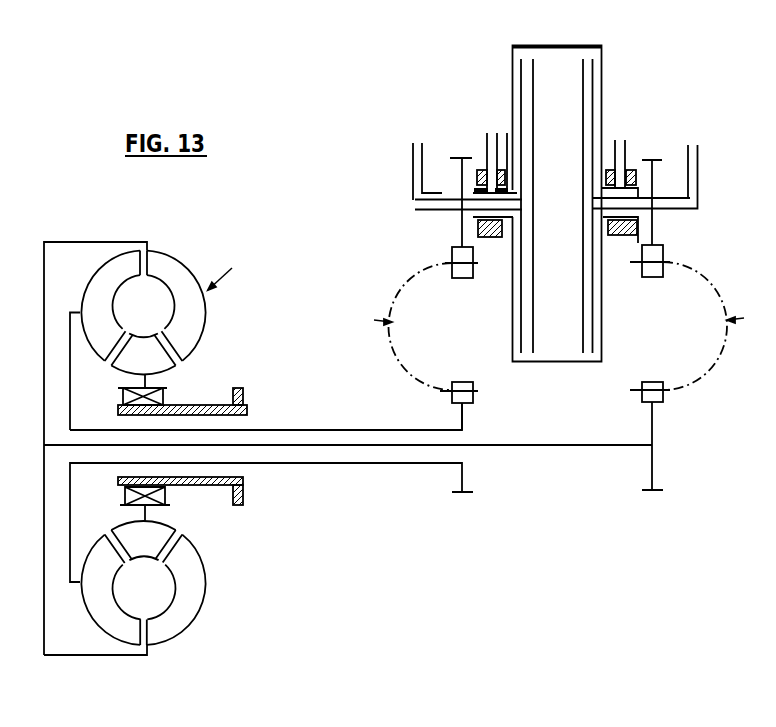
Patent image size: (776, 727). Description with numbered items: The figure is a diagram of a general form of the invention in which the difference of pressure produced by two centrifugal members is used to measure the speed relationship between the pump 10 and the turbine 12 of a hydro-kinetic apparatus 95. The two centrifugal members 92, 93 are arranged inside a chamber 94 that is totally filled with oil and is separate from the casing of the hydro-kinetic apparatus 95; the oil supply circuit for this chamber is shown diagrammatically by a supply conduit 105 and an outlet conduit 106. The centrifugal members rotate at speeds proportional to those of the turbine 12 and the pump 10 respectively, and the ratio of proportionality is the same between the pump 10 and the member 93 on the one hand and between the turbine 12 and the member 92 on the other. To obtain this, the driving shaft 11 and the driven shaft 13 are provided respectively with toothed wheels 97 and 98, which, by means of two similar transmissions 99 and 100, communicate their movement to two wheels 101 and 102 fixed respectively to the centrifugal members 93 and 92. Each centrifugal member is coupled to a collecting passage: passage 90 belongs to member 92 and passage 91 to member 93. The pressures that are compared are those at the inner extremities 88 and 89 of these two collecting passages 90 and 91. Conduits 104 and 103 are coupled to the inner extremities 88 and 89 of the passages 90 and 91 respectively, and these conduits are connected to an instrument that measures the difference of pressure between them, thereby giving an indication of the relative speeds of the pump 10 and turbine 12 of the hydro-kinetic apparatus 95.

The pump 10 is at (177, 257).
The driving shaft 11 is at (562, 450).
The turbine 12 is at (90, 277).
The driven shaft 13 is at (320, 430).
The inner extremity 88 is at (527, 202).
The inner extremity 89 is at (586, 208).
The collecting passage 90 is at (527, 121).
The collecting passage 91 is at (585, 122).
The centrifugal member 92 is at (516, 138).
The centrifugal member 93 is at (596, 147).
The chamber 94 is at (566, 44).
The hydro-kinetic apparatus 95 is at (231, 269).
The toothed wheel 97 is at (656, 425).
The toothed wheel 98 is at (467, 421).
The transmission 99 is at (714, 326).
The transmission 100 is at (398, 326).
The wheel 101 is at (656, 236).
The wheel 102 is at (461, 233).
The conduit 103 is at (696, 168).
The conduit 104 is at (413, 163).
The supply conduit 105 is at (483, 150).
The outlet conduit 106 is at (627, 153).